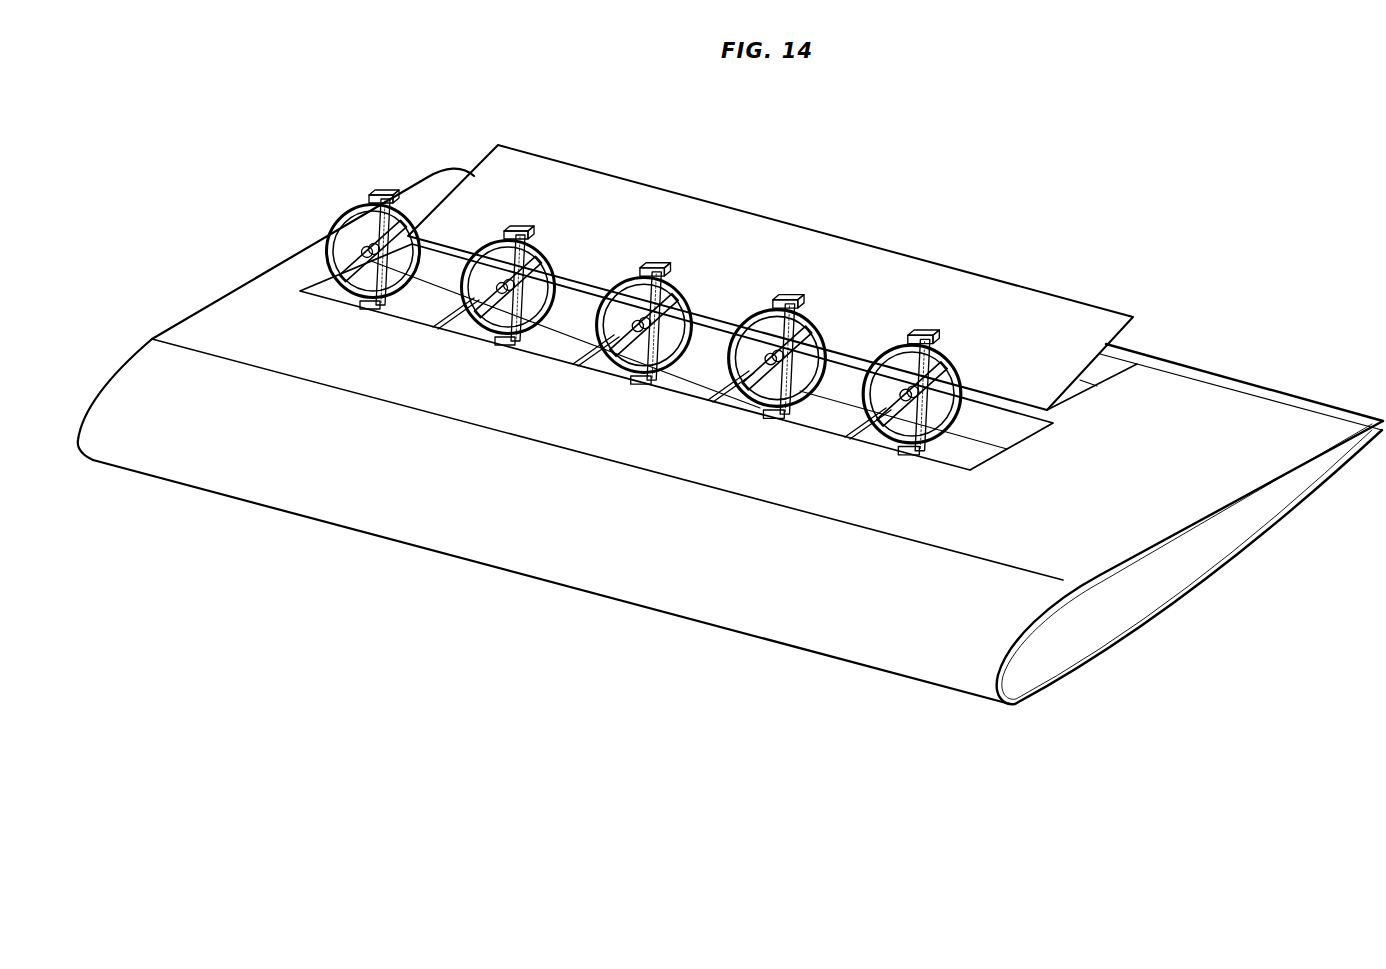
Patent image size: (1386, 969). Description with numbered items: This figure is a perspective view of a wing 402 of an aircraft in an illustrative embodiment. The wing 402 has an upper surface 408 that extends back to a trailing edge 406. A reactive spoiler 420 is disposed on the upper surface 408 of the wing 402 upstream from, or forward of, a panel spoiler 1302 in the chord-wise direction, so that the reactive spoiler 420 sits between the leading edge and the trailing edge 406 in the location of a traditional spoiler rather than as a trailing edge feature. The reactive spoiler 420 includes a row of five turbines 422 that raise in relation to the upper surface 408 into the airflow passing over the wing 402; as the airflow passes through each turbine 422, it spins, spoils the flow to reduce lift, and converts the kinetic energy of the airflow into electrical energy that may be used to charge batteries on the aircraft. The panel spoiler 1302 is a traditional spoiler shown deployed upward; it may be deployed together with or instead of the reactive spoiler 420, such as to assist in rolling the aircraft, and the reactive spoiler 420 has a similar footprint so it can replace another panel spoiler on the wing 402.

The wing 402 is at (355, 510).
The trailing edge 406 is at (1233, 377).
The upper surface 408 is at (187, 333).
The reactive spoiler 420 is at (262, 236).
The turbine 422 is at (380, 192).
The panel spoiler 1302 is at (907, 278).